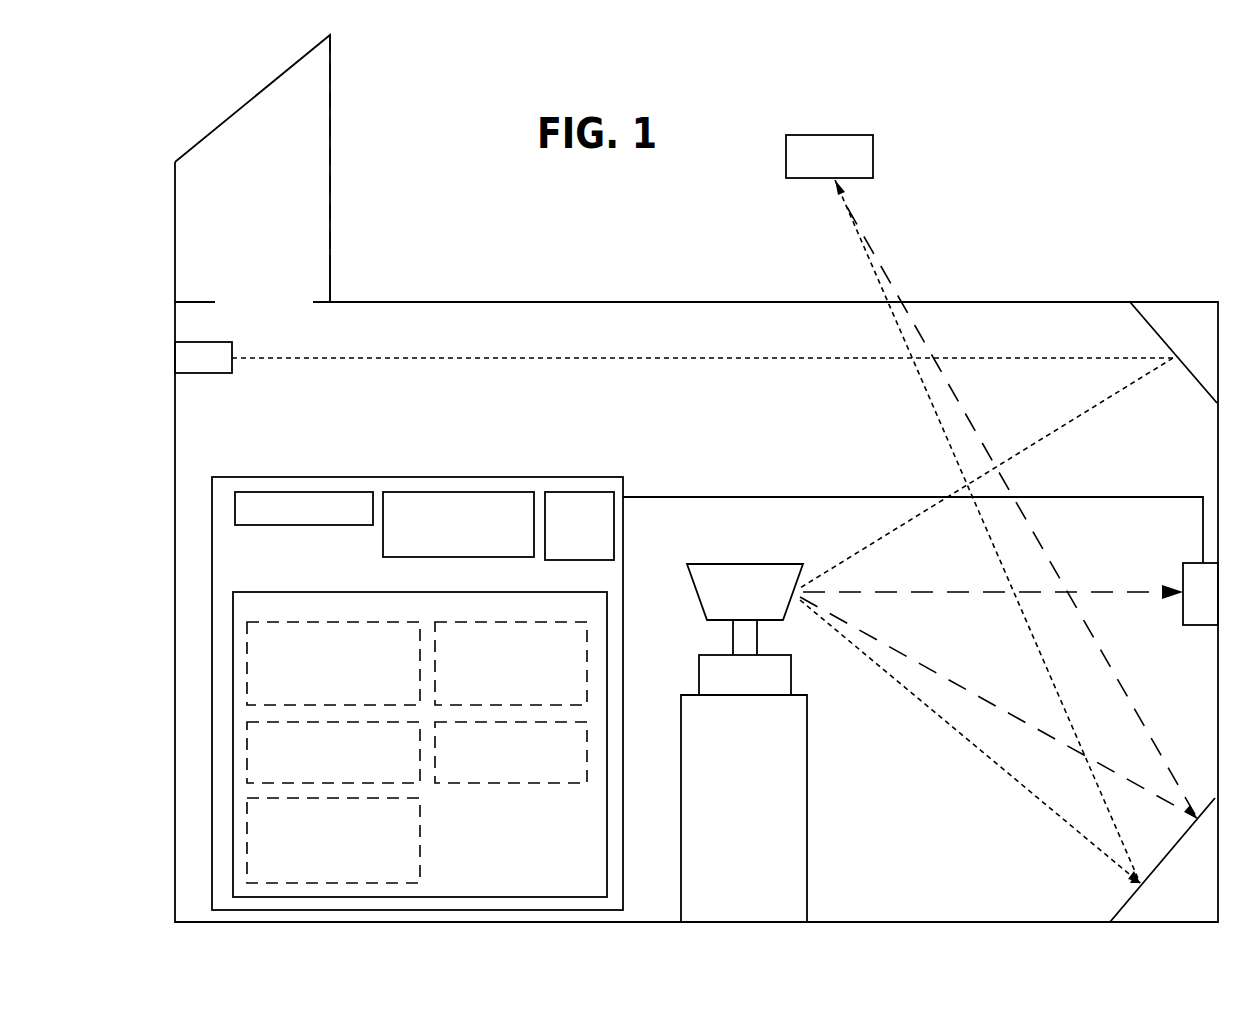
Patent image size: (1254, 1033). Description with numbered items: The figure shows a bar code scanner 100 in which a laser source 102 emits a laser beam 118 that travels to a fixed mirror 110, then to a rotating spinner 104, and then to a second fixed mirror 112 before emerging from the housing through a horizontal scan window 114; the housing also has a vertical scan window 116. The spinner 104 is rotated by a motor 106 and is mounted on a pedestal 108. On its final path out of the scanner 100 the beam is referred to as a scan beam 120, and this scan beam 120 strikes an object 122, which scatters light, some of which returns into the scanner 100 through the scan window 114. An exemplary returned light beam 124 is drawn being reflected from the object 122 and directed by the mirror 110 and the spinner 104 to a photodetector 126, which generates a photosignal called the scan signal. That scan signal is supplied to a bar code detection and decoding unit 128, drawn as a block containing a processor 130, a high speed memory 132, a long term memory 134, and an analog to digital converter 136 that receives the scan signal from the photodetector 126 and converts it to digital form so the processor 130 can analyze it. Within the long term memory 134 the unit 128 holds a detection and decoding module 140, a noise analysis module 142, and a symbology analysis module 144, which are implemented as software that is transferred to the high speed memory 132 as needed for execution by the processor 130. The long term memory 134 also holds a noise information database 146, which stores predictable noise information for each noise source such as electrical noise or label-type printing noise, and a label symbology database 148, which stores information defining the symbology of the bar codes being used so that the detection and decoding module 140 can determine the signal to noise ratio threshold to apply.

The scanner 100 is at (195, 78).
The laser source 102 is at (210, 373).
The rotating spinner 104 is at (700, 595).
The motor 106 is at (698, 680).
The pedestal 108 is at (680, 765).
The fixed mirror 110 is at (1176, 356).
The fixed mirror 112 is at (1167, 858).
The horizontal scan window 114 is at (745, 302).
The vertical scan window 116 is at (331, 158).
The laser beam 118 is at (537, 360).
The scan beam 120 is at (927, 392).
The object 122 is at (830, 135).
The light beam 124 is at (1045, 550).
The photodetector 126 is at (1183, 580).
The bar code detection and decoding unit 128 is at (398, 477).
The processor 130 is at (300, 525).
The high speed memory 132 is at (460, 557).
The long term memory 134 is at (347, 592).
The analog to digital converter 136 is at (580, 560).
The detection and decoding module 140 is at (328, 622).
The noise analysis module 142 is at (412, 783).
The symbology analysis module 144 is at (420, 860).
The noise information database 146 is at (540, 622).
The label symbology database 148 is at (535, 783).